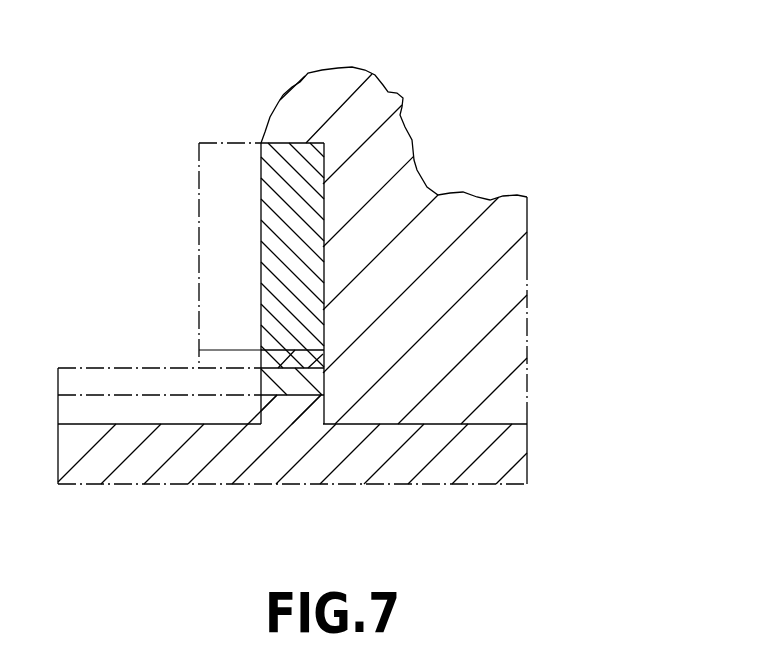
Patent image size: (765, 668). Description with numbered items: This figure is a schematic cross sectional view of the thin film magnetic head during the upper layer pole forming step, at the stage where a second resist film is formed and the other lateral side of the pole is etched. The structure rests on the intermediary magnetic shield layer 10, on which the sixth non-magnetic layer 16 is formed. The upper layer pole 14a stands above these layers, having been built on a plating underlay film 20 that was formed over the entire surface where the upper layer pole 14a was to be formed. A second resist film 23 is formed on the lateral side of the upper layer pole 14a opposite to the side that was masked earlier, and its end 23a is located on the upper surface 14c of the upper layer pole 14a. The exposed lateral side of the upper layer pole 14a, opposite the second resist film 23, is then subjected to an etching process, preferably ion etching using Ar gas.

The intermediary magnetic shield layer 10 is at (508, 443).
The second resist film 23 is at (508, 258).
The end of second resist film 23a is at (261, 143).
The upper layer pole 14a is at (273, 193).
The upper surface of upper layer pole 14c is at (303, 141).
The plating underlay film 20 is at (273, 333).
The sixth non-magnetic layer 16 is at (281, 376).